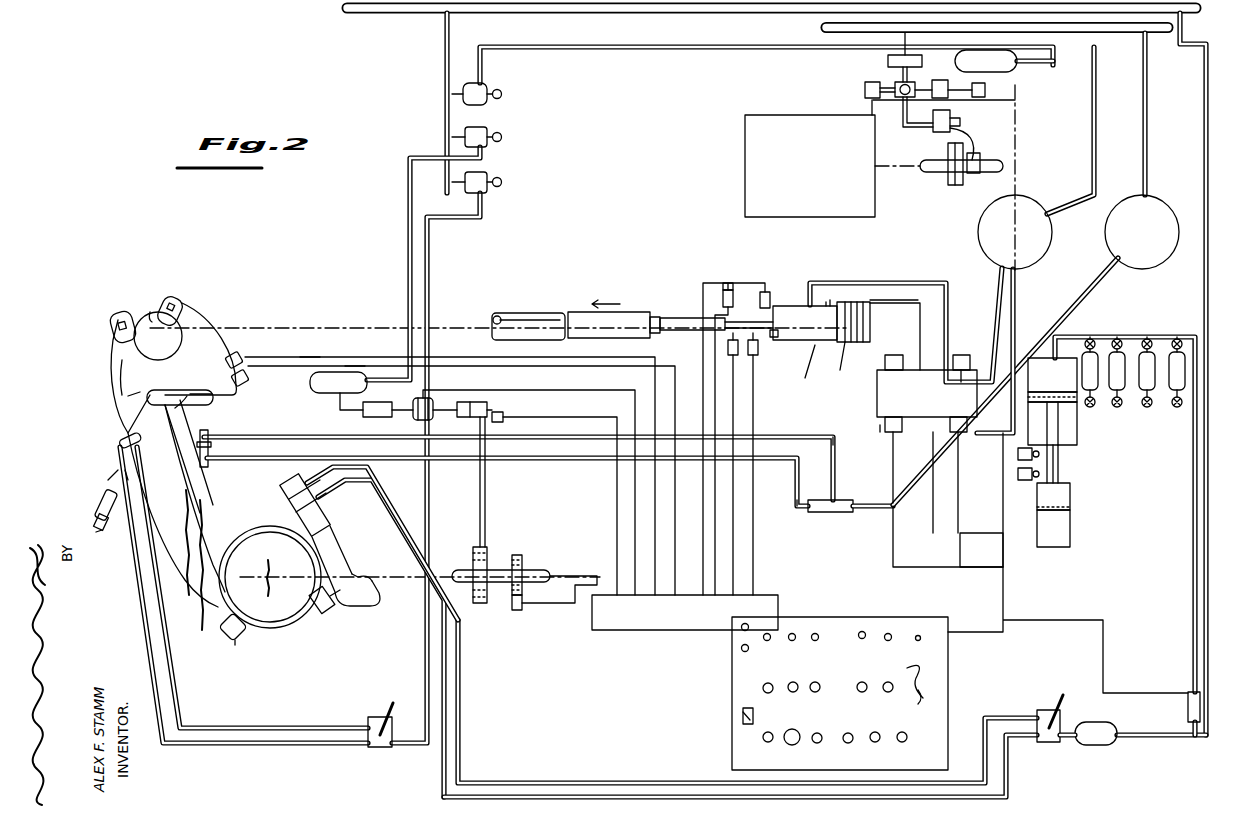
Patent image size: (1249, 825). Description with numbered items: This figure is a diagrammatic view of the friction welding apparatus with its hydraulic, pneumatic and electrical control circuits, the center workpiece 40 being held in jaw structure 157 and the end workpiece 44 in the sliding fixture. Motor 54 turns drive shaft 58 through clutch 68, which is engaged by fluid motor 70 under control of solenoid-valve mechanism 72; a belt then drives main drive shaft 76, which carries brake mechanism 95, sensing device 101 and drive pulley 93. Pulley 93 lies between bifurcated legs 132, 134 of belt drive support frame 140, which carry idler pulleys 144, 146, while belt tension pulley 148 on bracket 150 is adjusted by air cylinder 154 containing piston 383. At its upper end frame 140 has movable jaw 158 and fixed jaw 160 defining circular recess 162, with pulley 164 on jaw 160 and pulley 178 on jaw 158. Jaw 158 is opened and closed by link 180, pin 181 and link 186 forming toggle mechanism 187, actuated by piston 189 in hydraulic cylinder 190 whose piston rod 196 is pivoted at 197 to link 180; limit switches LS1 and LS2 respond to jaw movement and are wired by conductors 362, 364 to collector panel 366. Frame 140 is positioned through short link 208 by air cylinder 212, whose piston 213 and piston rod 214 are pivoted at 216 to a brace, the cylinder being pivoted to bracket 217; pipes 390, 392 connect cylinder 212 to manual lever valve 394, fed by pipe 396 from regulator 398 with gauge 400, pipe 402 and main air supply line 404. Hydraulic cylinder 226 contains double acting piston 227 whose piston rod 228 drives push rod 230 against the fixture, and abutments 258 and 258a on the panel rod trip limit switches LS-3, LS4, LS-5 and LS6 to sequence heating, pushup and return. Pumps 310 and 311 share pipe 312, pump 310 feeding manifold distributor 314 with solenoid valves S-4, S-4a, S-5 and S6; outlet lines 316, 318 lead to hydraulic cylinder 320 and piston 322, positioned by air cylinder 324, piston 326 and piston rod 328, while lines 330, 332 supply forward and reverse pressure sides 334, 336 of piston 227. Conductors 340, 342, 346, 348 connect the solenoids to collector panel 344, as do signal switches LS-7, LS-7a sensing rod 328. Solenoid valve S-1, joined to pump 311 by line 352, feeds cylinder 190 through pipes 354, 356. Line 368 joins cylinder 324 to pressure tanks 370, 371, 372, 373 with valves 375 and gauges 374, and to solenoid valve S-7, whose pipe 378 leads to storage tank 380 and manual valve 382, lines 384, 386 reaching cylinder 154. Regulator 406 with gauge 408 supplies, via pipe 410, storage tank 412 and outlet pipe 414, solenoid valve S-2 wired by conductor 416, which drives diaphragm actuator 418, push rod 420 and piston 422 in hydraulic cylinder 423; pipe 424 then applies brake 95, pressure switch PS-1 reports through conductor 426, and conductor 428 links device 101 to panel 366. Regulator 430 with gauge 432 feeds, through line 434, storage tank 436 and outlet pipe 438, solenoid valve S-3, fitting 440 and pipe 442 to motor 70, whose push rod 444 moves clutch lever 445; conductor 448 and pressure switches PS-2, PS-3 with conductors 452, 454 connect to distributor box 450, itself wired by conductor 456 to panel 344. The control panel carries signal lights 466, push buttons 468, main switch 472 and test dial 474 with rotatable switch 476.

The workpiece ball / shaft 40 is at (560, 312).
The spindle cylinder 44 is at (583, 312).
The motor 54 is at (802, 122).
The bracket 58 is at (932, 172).
The disk 68 is at (955, 186).
The shaft 70 is at (961, 154).
The valve assembly 72 is at (878, 80).
The shaft 76 is at (458, 570).
The wheel 93 is at (274, 628).
The gear 95 is at (490, 540).
The valve 101 is at (515, 612).
The roller 132 is at (220, 631).
The block 134 is at (342, 604).
The arm 140 is at (197, 619).
The pin 144 is at (234, 644).
The block 146 is at (323, 618).
The foot 148 is at (368, 605).
The arm 150 is at (338, 560).
The conduit 154 is at (288, 485).
The gripper assembly 157 is at (104, 356).
The finger 158 is at (187, 315).
The gripper body 160 is at (122, 372).
The pivot 162 is at (150, 310).
The finger 164 is at (114, 314).
The ring 178 is at (172, 310).
The pin 180 is at (216, 402).
The link 181 is at (185, 440).
The notch 186 is at (178, 418).
The surface 187 is at (138, 398).
The link 189 is at (195, 460).
The conduit 190 is at (214, 455).
The rod 196 is at (218, 420).
The pin 197 is at (215, 396).
The lever 208 is at (118, 440).
The cylinder 212 is at (93, 521).
The cylinder 213 is at (140, 560).
The cylinder 214 is at (98, 492).
The rod 216 is at (108, 478).
The pivot 217 is at (95, 532).
The housing 226 is at (808, 304).
The dog 227 is at (847, 361).
The dog 228 is at (805, 366).
The rod 230 is at (688, 318).
The bracket 258 is at (737, 283).
The dog 258a is at (777, 338).
The pump 310 is at (1029, 260).
The pump 311 is at (1156, 262).
The conduit 312 is at (1140, 46).
The port 314 is at (878, 433).
The conduit 316 is at (966, 482).
The conduit 318 is at (948, 536).
The cylinder 320 is at (1070, 534).
The piston 322 is at (1070, 510).
The cylinder 324 is at (1077, 430).
The valve block 326 is at (1052, 380).
The piston rod 328 is at (1058, 466).
The block 330 is at (870, 308).
The conduit 332 is at (902, 286).
The port 334 is at (826, 302).
The port 336 is at (836, 285).
The conduit 340 is at (986, 314).
The conduit 342 is at (1014, 351).
The control panel 344 is at (952, 673).
The conduit 346 is at (893, 470).
The valve 348 is at (981, 550).
The conduit 352 is at (858, 513).
The conduit 354 is at (852, 472).
The conduit 356 is at (808, 436).
The wire 362 is at (329, 356).
The wire 364 is at (372, 364).
The terminal block 366 is at (655, 633).
The header conduit 368 is at (1196, 326).
The solenoid valve 370 is at (1110, 405).
The solenoid valve 371 is at (1142, 407).
The conduit 372 is at (1155, 304).
The conduit 373 is at (1187, 338).
The solenoid valve 374 is at (1172, 405).
The solenoid valve 375 is at (1088, 342).
The conduit 378 is at (1143, 740).
The filter 380 is at (1082, 748).
The switch valve 382 is at (1065, 715).
The switch 383 is at (292, 497).
The conduit 384 is at (991, 714).
The conduit 386 is at (1020, 740).
The conduit 390 is at (286, 746).
The conduit 392 is at (265, 726).
The valve 394 is at (368, 750).
The conduit 396 is at (446, 685).
The conduit 398 is at (491, 196).
The valve 400 is at (504, 180).
The conduit 402 is at (434, 66).
The supply conduit 404 is at (1199, 14).
The valve 406 is at (490, 134).
The gauge 408 is at (503, 137).
The conduit 410 is at (419, 140).
The reservoir 412 is at (326, 384).
The conduit 414 is at (346, 412).
The wires 416 is at (503, 358).
The valve 418 is at (440, 416).
The wire 420 is at (446, 398).
The valve 422 is at (474, 402).
The conduit 423 is at (490, 408).
The shaft 424 is at (487, 484).
The wire 426 is at (546, 426).
The wire 428 is at (568, 612).
The valve 430 is at (490, 90).
The gauge 432 is at (503, 94).
The conduit 434 is at (620, 58).
The conduit 436 is at (1040, 66).
The conduit 438 is at (997, 28).
The valve 440 is at (865, 92).
The conduit 442 is at (905, 128).
The cylinder 444 is at (968, 120).
The arm 445 is at (976, 141).
The reservoir 448 is at (986, 61).
The valve 450 is at (985, 90).
The wire 452 is at (872, 120).
The wire 454 is at (1017, 100).
The line 456 is at (1022, 173).
The terminals 466 is at (815, 633).
The terminals 468 is at (815, 743).
The switch 472 is at (743, 712).
The pointer 474 is at (935, 690).
The indicator 476 is at (905, 708).
The solenoid S-1 is at (812, 512).
The solenoid S-2 is at (388, 418).
The solenoid S-3 is at (882, 44).
The solenoid S-4 is at (885, 362).
The solenoid valve S-4a is at (927, 393).
The solenoid S-5 is at (926, 434).
The solenoid S6 is at (962, 354).
The solenoid S-7 is at (1188, 695).
The pressure switch PS-1 is at (503, 420).
The pressure switch PS-2 is at (872, 104).
The pressure switch PS-3 is at (945, 55).
The limit switch LS1 is at (236, 352).
The limit switch LS2 is at (246, 370).
The limit switch LS-3 is at (758, 350).
The limit switch LS4 is at (723, 288).
The limit switch LS-5 is at (728, 350).
The limit switch LS6 is at (763, 292).
The limit switch LS-7 is at (1018, 454).
The limit switch LS-7a is at (1018, 474).